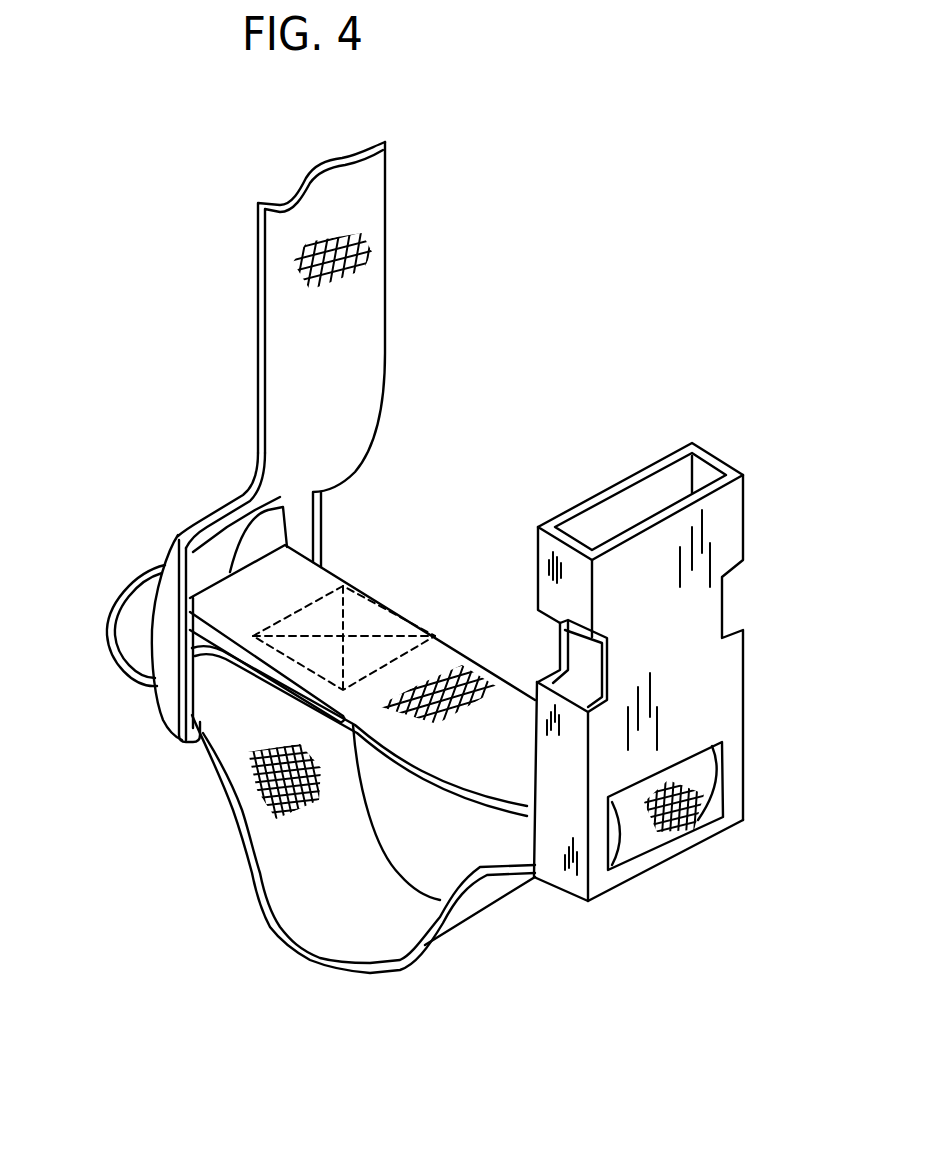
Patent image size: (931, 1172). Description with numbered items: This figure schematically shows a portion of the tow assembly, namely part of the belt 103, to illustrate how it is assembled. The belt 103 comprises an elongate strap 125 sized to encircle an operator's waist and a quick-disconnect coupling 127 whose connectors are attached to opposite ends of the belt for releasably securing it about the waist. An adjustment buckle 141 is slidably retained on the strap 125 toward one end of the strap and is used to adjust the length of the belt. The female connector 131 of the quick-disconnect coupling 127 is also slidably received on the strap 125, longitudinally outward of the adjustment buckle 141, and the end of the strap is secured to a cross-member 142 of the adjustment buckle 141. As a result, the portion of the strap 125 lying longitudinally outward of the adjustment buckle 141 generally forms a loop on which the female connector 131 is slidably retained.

The belt 103 is at (260, 300).
The elongate strap 125 is at (383, 358).
The adjustment buckle 141 is at (177, 537).
The cross-member 142 is at (190, 653).
The quick-disconnect coupling 127 is at (677, 582).
The female connector 131 is at (744, 518).